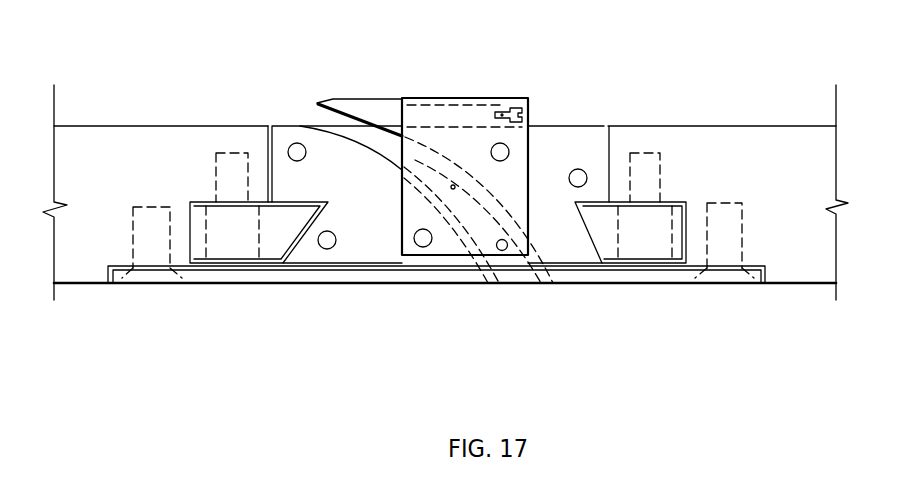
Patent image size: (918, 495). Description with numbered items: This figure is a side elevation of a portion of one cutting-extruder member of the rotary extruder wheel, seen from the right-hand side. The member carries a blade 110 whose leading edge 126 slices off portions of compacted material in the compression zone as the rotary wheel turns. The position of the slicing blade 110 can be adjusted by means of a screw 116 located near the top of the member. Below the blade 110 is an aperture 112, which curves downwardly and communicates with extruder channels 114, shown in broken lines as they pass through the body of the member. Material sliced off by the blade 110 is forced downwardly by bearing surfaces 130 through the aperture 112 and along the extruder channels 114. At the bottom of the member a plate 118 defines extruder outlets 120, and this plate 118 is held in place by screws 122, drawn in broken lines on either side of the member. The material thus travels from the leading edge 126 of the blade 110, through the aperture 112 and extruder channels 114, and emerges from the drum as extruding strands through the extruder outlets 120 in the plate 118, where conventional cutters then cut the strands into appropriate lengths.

The blade 110 is at (343, 98).
The aperture 112 is at (388, 146).
The extruder channels 114 is at (493, 200).
The screw 116 is at (516, 106).
The plate 118 is at (232, 277).
The extruder outlets 120 is at (550, 280).
The screws 122 is at (152, 248).
The leading edge 126 is at (317, 103).
The bearing surfaces 130 is at (347, 115).